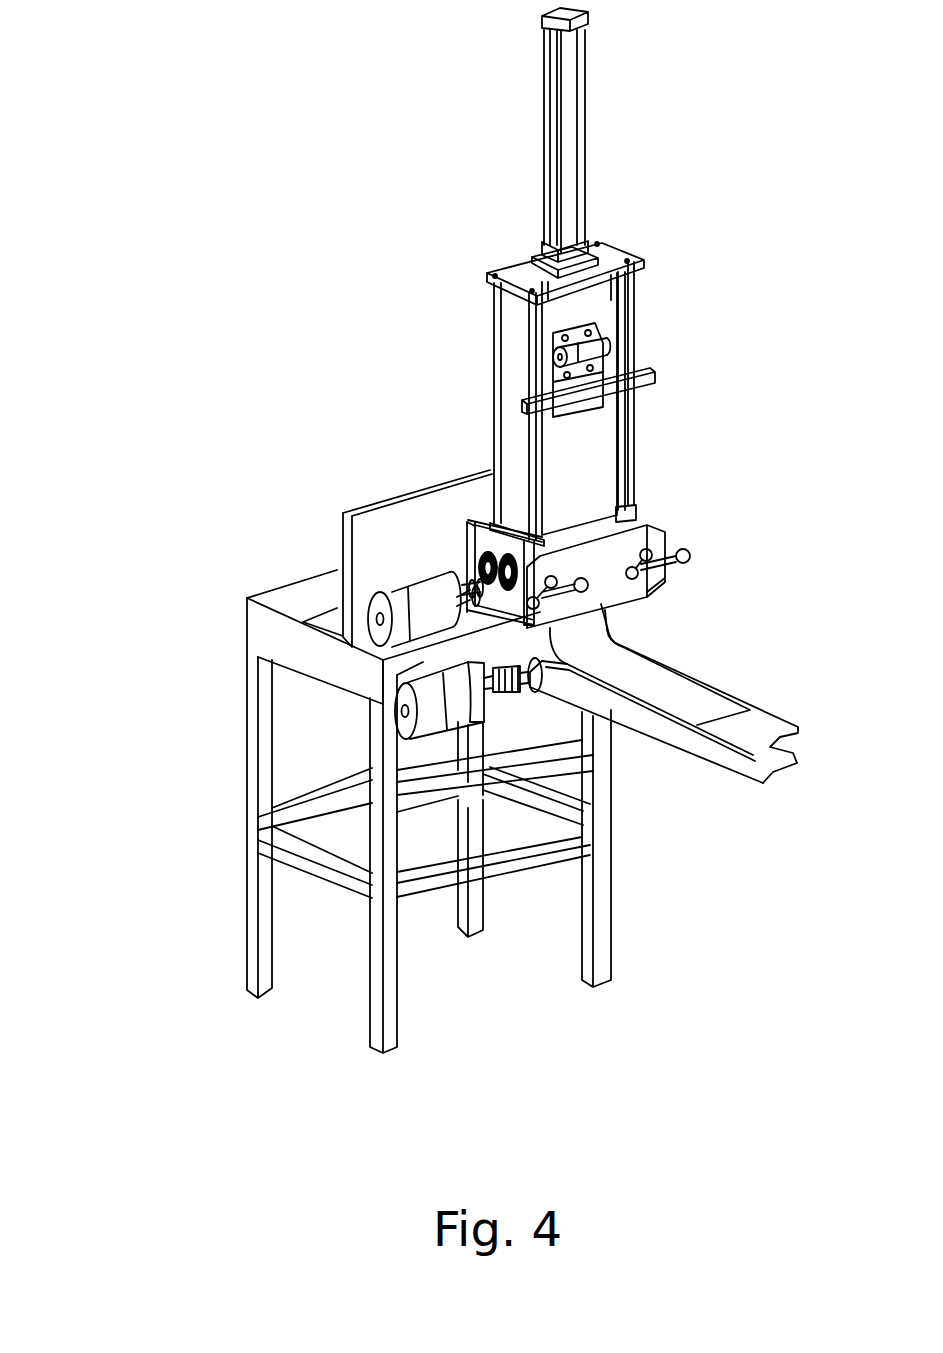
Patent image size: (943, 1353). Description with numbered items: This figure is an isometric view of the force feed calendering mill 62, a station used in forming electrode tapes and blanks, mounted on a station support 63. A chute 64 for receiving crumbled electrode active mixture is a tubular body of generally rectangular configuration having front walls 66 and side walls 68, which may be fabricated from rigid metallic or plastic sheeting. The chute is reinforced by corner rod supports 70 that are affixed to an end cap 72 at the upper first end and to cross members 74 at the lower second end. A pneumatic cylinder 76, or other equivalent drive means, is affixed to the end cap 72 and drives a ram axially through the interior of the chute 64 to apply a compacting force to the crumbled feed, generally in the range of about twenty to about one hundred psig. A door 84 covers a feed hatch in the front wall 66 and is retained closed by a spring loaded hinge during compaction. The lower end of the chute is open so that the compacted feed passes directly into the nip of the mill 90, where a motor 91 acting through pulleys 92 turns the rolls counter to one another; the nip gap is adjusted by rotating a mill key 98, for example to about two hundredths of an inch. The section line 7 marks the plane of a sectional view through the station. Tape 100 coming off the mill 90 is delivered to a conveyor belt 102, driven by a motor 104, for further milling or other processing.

The section line 7- 7 is at (571, 623).
The force feed calendering mill 62 is at (352, 222).
The station support 63 is at (270, 635).
The chute 64 is at (487, 350).
The front walls 66 is at (556, 462).
The side walls 68 is at (515, 392).
The corner rod supports 70 is at (490, 310).
The end cap 72 is at (628, 256).
The cross members 74 is at (649, 529).
The pneumatic cylinder 76 is at (560, 132).
The door 84 is at (620, 392).
The mill 90 is at (641, 544).
The motor 91 is at (416, 598).
The pulleys 92 is at (482, 533).
The mill key 98 is at (684, 553).
The tape 100 is at (673, 693).
The conveyor belt 102 is at (627, 710).
The motor 104 is at (443, 710).